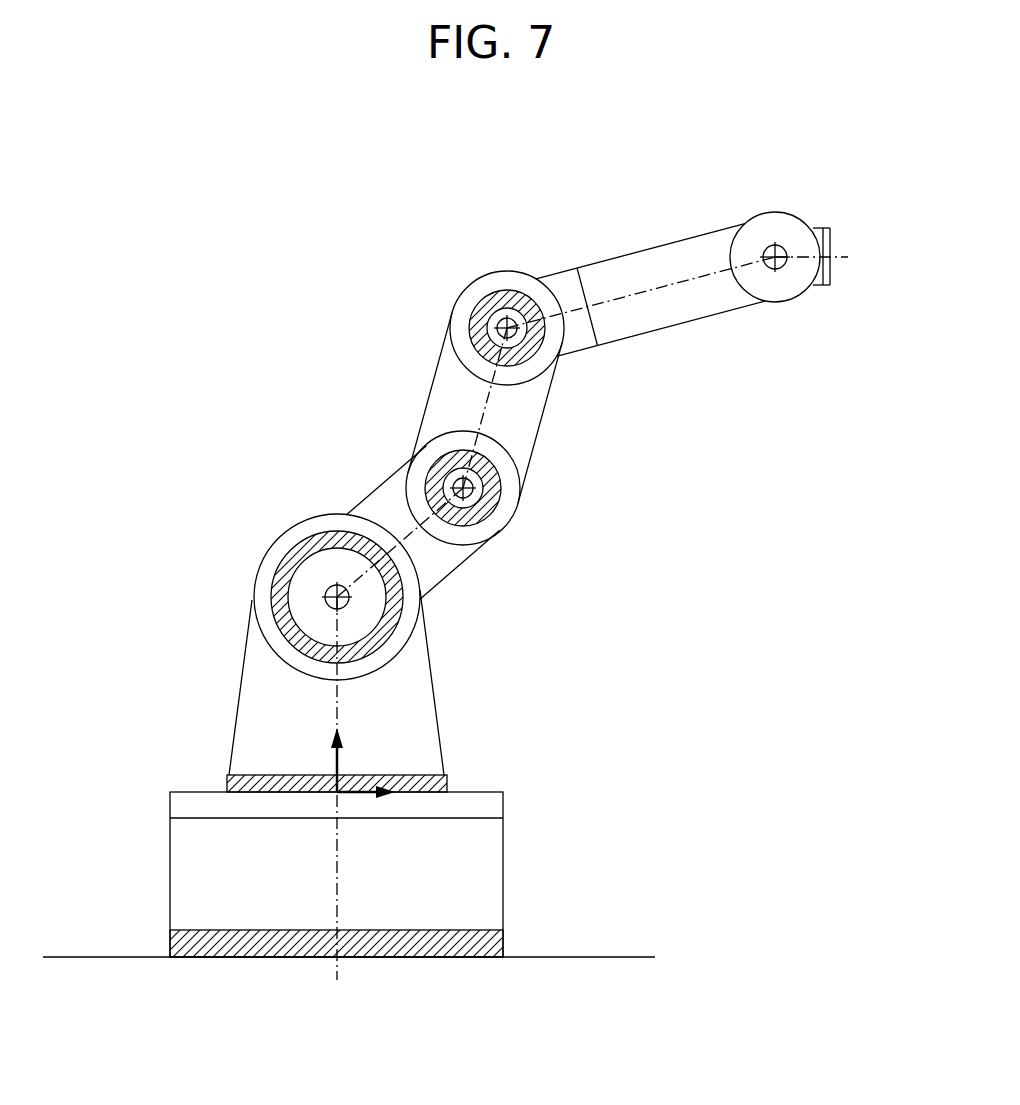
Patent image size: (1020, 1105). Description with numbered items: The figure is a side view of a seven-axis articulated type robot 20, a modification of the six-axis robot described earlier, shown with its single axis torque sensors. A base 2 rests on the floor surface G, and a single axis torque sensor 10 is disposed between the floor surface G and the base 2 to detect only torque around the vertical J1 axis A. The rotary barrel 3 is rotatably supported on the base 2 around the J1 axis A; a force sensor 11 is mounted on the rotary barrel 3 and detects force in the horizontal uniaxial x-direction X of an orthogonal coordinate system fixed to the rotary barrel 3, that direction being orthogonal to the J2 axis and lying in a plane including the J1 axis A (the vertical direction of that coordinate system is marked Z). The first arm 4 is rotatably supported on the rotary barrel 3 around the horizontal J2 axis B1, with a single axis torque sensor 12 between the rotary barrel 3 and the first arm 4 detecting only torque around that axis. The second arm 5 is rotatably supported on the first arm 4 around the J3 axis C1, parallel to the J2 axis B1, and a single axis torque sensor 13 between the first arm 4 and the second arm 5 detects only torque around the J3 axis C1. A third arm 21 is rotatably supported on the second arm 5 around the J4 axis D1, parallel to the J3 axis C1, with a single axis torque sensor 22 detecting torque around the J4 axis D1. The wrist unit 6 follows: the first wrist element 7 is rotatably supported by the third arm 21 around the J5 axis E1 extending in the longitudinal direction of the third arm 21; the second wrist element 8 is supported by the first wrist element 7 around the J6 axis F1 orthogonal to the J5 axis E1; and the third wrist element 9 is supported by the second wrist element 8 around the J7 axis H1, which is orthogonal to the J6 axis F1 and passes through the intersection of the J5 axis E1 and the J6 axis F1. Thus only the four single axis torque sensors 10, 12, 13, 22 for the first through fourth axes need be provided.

The 7-axis articulated type robot 20 is at (262, 250).
The base 2 is at (390, 874).
The rotary barrel 3 is at (437, 683).
The first arm 4 is at (380, 482).
The second arm 5 is at (430, 385).
The wrist unit 6 is at (641, 253).
The first wrist element 7 is at (650, 247).
The second wrist element 8 is at (812, 290).
The third wrist element 9 is at (832, 238).
The single axis torque sensor 10 is at (503, 940).
The force sensor 11 is at (447, 778).
The single axis torque sensor 12 is at (405, 588).
The single axis torque sensor 13 is at (497, 523).
The third arm 21 is at (557, 268).
The single axis torque sensor 22 is at (530, 360).
The J1 axis A is at (337, 873).
The J2 axis B1 is at (333, 594).
The J3 axis C1 is at (460, 486).
The J4 axis D1 is at (503, 325).
The J5 axis E1 is at (667, 287).
The J6 axis F1 is at (780, 252).
The floor surface G is at (120, 957).
The J7 axis H1 is at (846, 262).
The x-direction X is at (370, 803).
The Z axis Z is at (329, 756).